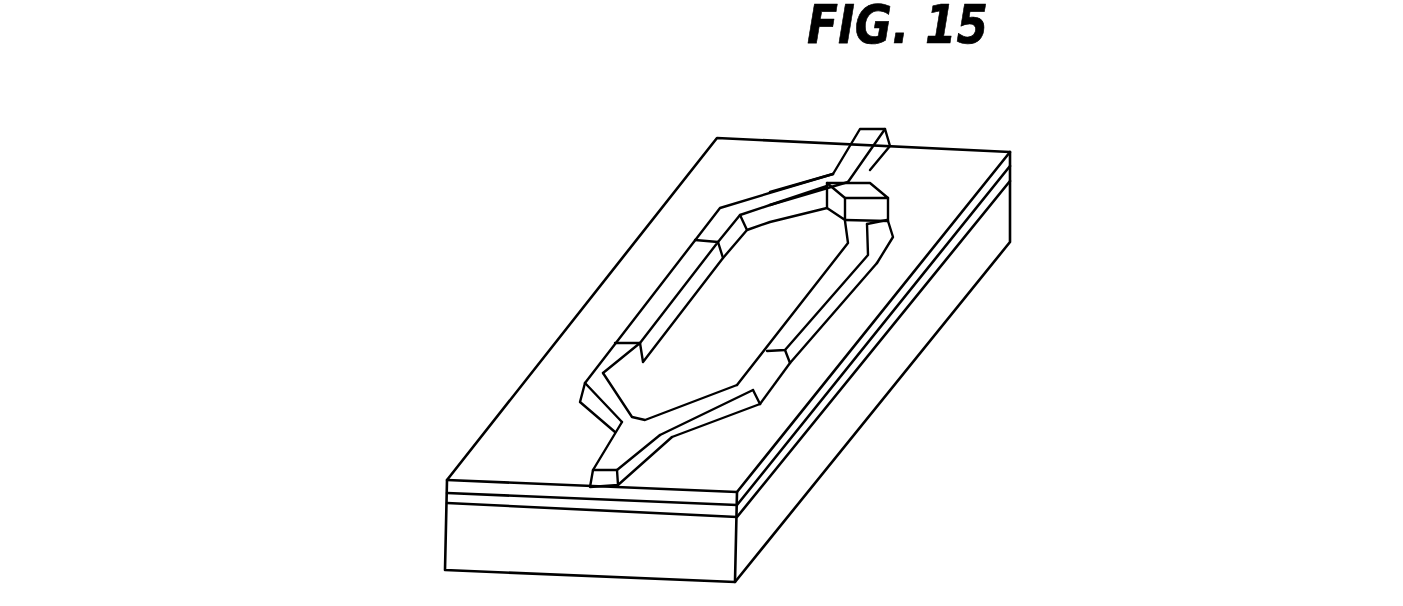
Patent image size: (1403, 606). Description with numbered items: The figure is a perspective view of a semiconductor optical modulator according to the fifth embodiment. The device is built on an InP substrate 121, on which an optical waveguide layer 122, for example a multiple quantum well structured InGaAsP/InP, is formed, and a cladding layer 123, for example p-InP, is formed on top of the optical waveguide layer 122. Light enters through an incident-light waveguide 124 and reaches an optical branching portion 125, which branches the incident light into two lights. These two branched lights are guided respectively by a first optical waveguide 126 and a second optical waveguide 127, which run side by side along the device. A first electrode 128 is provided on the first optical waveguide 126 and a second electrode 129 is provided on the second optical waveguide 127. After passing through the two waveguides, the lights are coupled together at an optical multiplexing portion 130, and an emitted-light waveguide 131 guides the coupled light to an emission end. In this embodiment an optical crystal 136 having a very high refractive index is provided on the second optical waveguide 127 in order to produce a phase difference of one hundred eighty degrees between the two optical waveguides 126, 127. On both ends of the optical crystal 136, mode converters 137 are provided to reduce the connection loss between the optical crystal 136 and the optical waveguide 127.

The InP substrate 121 is at (737, 545).
The optical waveguide layer 122 is at (740, 512).
The cladding layer 123 is at (623, 472).
The incident-light waveguide 124 is at (603, 457).
The optical branching portion 125 is at (605, 423).
The first optical waveguide 126 is at (607, 362).
The second optical waveguide 127 is at (767, 363).
The first electrode 128 is at (668, 292).
The second electrode 129 is at (812, 306).
The optical multiplexing portion 130 is at (820, 175).
The emitted-light waveguide 131 is at (868, 159).
The optical crystal 136 is at (889, 198).
The mode converter 137 is at (892, 222).